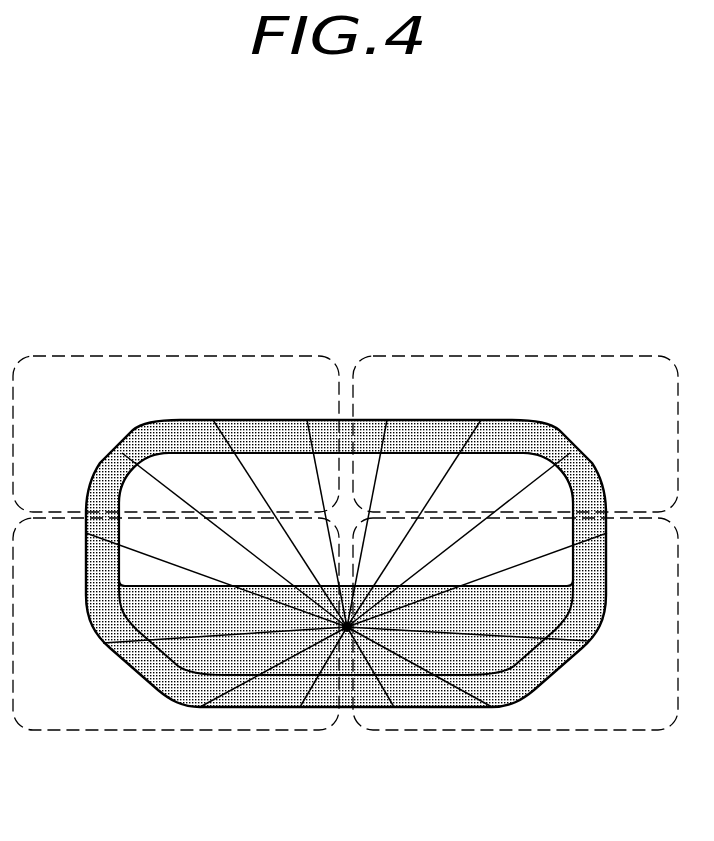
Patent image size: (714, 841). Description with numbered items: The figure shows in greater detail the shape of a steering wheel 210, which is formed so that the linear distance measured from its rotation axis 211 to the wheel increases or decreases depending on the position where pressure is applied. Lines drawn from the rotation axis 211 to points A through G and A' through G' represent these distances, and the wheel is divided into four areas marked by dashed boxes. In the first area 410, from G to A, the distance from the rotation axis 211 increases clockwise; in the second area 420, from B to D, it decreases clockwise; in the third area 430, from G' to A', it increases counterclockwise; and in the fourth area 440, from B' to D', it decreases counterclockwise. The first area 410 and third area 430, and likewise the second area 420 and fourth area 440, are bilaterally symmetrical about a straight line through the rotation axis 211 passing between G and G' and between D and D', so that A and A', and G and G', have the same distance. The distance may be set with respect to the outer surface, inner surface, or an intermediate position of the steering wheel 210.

The steering wheel 210 is at (567, 665).
The rotation axis 211 is at (300, 708).
The first area 410 is at (165, 732).
The second area 420 is at (164, 355).
The third area 430 is at (527, 732).
The fourth area 440 is at (526, 355).